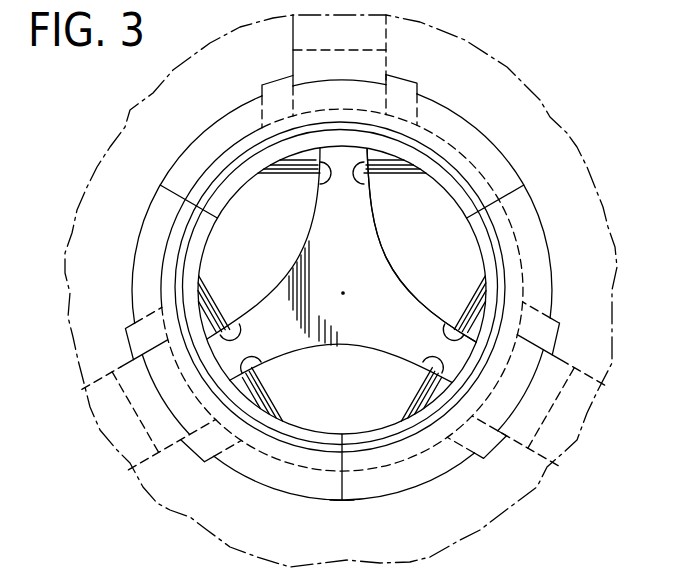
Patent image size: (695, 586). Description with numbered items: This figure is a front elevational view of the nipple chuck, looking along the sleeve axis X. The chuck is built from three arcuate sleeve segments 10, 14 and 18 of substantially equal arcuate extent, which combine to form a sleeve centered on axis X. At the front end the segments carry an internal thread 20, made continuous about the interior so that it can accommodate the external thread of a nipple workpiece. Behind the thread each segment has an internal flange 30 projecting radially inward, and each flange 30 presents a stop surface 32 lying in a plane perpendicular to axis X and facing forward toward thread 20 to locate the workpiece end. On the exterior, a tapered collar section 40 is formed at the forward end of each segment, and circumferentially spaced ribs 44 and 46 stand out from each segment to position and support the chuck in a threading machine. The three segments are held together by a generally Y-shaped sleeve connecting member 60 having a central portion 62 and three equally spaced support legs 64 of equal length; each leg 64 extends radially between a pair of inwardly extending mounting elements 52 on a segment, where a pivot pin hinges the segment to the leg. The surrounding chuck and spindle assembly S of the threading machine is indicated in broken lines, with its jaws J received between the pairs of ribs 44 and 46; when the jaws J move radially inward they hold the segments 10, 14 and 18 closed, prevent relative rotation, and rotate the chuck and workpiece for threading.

The arcuate sleeve segment 10 is at (500, 168).
The arcuate sleeve segment 14 is at (522, 211).
The arcuate sleeve segment 18 is at (327, 492).
The internal thread 20 is at (180, 262).
The internal flange 30 is at (204, 251).
The stop surface 32 is at (190, 222).
The tapered collar section 40 is at (228, 122).
The rib 44 is at (274, 87).
The rib 46 is at (405, 74).
The mounting element 52 is at (324, 184).
The sleeve connecting member 60 is at (370, 313).
The central portion 62 is at (368, 265).
The support leg 64 is at (356, 212).
The chuck and spindle assembly S is at (514, 92).
The jaw J is at (374, 33).
The axis X is at (344, 290).